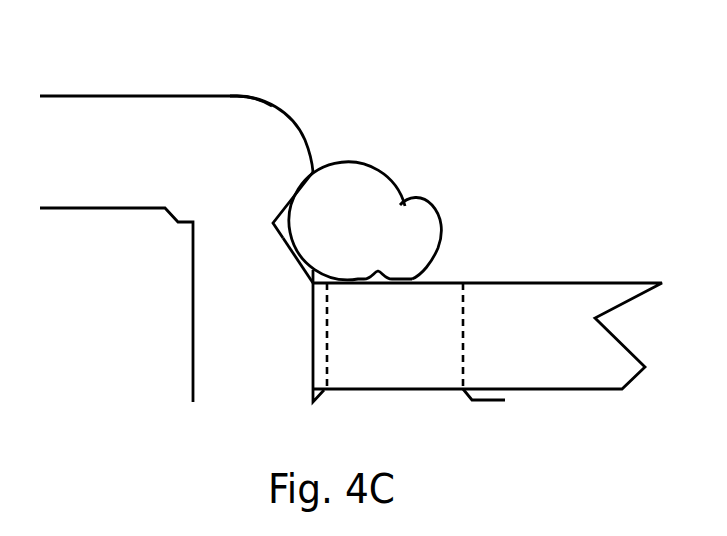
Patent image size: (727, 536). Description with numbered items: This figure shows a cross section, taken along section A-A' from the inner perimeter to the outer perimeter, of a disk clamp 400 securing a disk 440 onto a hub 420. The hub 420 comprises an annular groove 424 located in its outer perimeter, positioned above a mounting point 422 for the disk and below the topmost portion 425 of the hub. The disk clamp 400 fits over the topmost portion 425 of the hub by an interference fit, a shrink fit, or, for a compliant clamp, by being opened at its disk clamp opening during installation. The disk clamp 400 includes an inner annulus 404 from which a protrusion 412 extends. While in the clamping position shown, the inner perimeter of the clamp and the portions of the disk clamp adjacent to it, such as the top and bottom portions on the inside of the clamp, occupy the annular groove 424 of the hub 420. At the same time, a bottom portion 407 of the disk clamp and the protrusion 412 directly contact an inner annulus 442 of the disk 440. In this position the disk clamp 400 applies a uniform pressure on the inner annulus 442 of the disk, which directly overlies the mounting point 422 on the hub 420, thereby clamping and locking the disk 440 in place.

The disk clamp 400 is at (472, 72).
The hub 420 is at (115, 157).
The topmost portion of the hub 425 is at (200, 96).
The annular groove 424 is at (283, 217).
The bottom portion of the disk clamp 407 is at (350, 262).
The inner annulus of the disk clamp 404 is at (407, 202).
The protrusion 412 is at (422, 242).
The disk 440 is at (575, 341).
The inner annulus of the disk 442 is at (372, 356).
The mounting point 422 is at (425, 395).